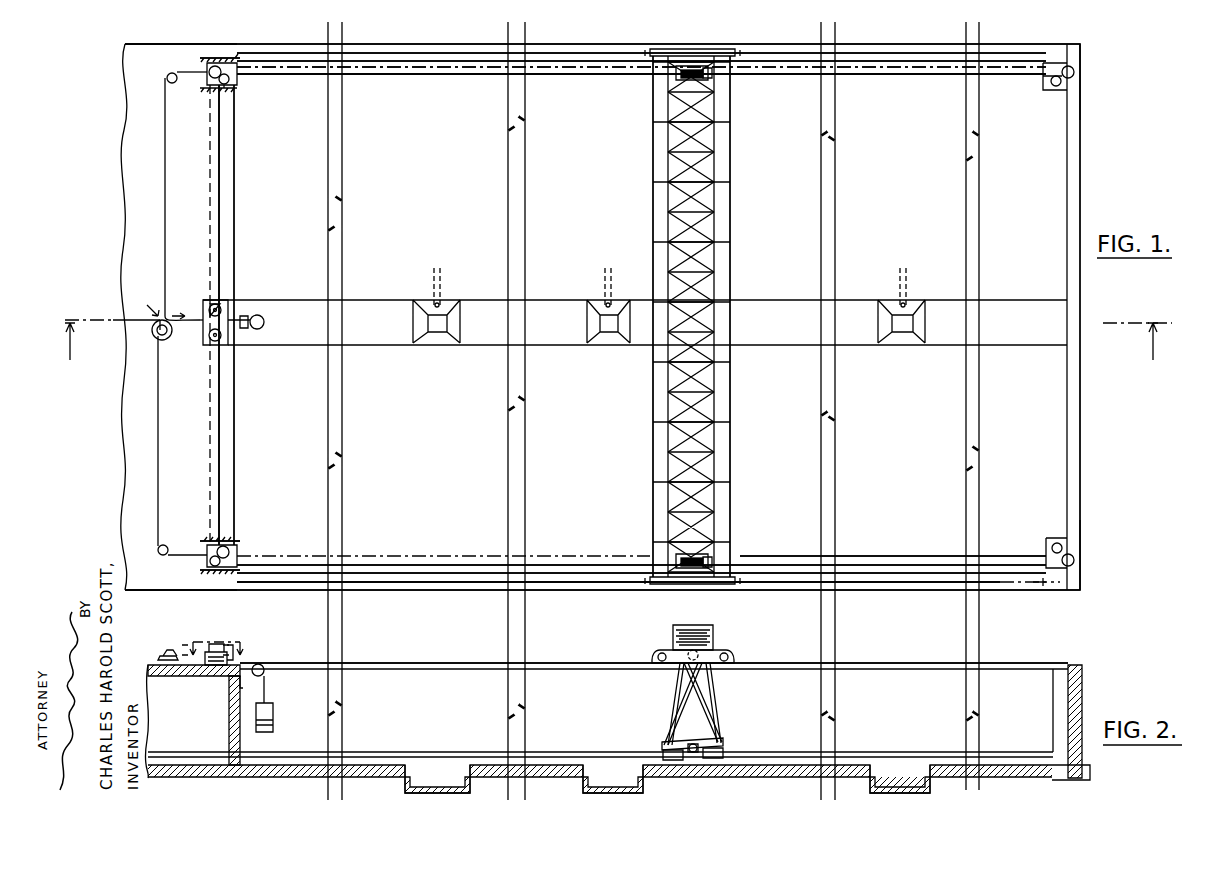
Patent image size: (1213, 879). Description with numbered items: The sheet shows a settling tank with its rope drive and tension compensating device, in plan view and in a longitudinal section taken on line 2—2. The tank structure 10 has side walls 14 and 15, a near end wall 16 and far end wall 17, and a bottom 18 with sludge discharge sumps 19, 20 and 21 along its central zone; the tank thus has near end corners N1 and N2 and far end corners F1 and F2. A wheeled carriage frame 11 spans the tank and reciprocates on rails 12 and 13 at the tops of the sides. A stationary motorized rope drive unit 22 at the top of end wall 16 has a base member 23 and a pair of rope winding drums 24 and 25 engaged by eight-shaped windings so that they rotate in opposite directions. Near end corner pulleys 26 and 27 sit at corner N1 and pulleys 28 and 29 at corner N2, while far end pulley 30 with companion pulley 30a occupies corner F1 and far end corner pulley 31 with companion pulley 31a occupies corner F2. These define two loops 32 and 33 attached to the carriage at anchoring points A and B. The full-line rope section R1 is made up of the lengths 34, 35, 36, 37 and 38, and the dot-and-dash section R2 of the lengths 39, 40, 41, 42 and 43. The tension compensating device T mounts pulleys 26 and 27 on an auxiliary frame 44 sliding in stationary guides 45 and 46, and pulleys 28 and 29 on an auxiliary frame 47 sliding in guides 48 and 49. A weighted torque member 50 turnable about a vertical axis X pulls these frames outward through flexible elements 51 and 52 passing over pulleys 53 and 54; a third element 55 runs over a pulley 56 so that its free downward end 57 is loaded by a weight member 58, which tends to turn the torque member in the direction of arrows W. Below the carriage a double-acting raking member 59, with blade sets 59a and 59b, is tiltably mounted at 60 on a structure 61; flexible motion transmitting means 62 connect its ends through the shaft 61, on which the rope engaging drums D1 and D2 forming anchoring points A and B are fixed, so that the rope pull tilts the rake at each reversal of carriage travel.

In FIG. 1, the tank structure 10 is at (626, 600).
In FIG. 1, the carriage frame 11 is at (662, 440).
In FIG. 2, the carriage frame 11 is at (728, 634).
In FIG. 1, the rail 12 is at (878, 585).
In FIG. 1, the rail 13 is at (862, 52).
In FIG. 1, the side wall 14 is at (558, 565).
In FIG. 1, the side wall 15 is at (582, 74).
In FIG. 1, the end wall 16 is at (235, 458).
In FIG. 2, the end wall 16 is at (228, 715).
In FIG. 1, the end wall 17 is at (1066, 415).
In FIG. 2, the end wall 17 is at (1078, 693).
In FIG. 1, the bottom 18 is at (432, 474).
In FIG. 2, the bottom 18 is at (805, 765).
In FIG. 1, the sludge discharge sump 19 is at (432, 345).
In FIG. 2, the sludge discharge sump 19 is at (462, 780).
In FIG. 1, the sludge discharge sump 20 is at (606, 345).
In FIG. 2, the sludge discharge sump 20 is at (632, 778).
In FIG. 1, the sludge discharge sump 21 is at (898, 345).
In FIG. 2, the sludge discharge sump 21 is at (883, 780).
In FIG. 1, the rope drive unit 22 is at (196, 330).
In FIG. 1, the base member 23 is at (222, 305).
In FIG. 1, the rope winding drum 24 is at (222, 340).
In FIG. 1, the rope winding drum 25 is at (218, 300).
In FIG. 1, the near end corner pulley 26 is at (218, 572).
In FIG. 2, the near end corner pulley 26 is at (222, 678).
In FIG. 1, the near end corner pulley 27 is at (230, 552).
In FIG. 1, the near end corner pulley 28 is at (213, 58).
In FIG. 1, the near end corner pulley 29 is at (230, 80).
In FIG. 1, the far end pulley 30 is at (1075, 558).
In FIG. 1, the companion pulley 30a is at (1051, 546).
In FIG. 1, the far end corner pulley 31 is at (1075, 72).
In FIG. 1, the companion pulley 31a is at (1052, 88).
In FIG. 1, the loop 32 is at (1036, 568).
In FIG. 1, the loop 33 is at (1050, 64).
In FIG. 1, the rope length 34 is at (868, 556).
In FIG. 1, the rope length 35 is at (447, 563).
In FIG. 1, the rope length 36 is at (212, 445).
In FIG. 1, the rope length 37 is at (235, 182).
In FIG. 1, the rope length 38 is at (422, 76).
In FIG. 1, the rope length 39 is at (938, 74).
In FIG. 1, the rope length 40 is at (882, 68).
In FIG. 1, the rope length 41 is at (208, 172).
In FIG. 1, the rope length 42 is at (222, 410).
In FIG. 1, the rope length 43 is at (370, 563).
In FIG. 1, the auxiliary frame 44 is at (208, 560).
In FIG. 1, the stationary guide 45 is at (207, 573).
In FIG. 1, the stationary guide 46 is at (232, 540).
In FIG. 1, the auxiliary frame 47 is at (209, 78).
In FIG. 1, the stationary guide 48 is at (225, 88).
In FIG. 1, the stationary guide 49 is at (206, 57).
In FIG. 1, the weighted torque member 50 is at (156, 346).
In FIG. 2, the weighted torque member 50 is at (166, 658).
In FIG. 1, the flexible force-transmitting element 51 is at (160, 395).
In FIG. 1, the flexible force-transmitting element 52 is at (160, 194).
In FIG. 1, the pulley 53 is at (158, 549).
In FIG. 1, the pulley 54 is at (169, 72).
In FIG. 1, the flexible force-transmitting element 55 is at (192, 300).
In FIG. 2, the flexible force-transmitting element 55 is at (235, 665).
In FIG. 1, the pulley 56 is at (258, 315).
In FIG. 2, the pulley 56 is at (264, 668).
In FIG. 2, the free downward end 57 is at (268, 688).
In FIG. 2, the weight member 58 is at (274, 713).
In FIG. 2, the raking member 59 is at (720, 738).
In FIG. 2, the raking blades 59a is at (664, 758).
In FIG. 2, the raking blades 59b is at (712, 758).
In FIG. 2, the tilting mount 60 is at (692, 753).
In FIG. 1, the structure / shaft 61 is at (718, 418).
In FIG. 2, the structure / shaft 61 is at (712, 678).
In FIG. 2, the flexible motion transmitting means 62 is at (712, 712).
In FIG. 1, the section line 2 is at (616, 346).
In FIG. 1, the anchoring point A is at (713, 558).
In FIG. 1, the anchoring point B is at (713, 76).
In FIG. 1, the rope engaging drum D1 is at (678, 556).
In FIG. 1, the rope engaging drum D2 is at (678, 75).
In FIG. 1, the far end corner F1 is at (1072, 578).
In FIG. 1, the far end corner F2 is at (1078, 46).
In FIG. 1, the near end corner N1 is at (181, 577).
In FIG. 1, the near end corner N2 is at (165, 48).
In FIG. 1, the rope section R1 is at (300, 582).
In FIG. 1, the rope section R2 is at (310, 62).
In FIG. 1, the rope tension compensating device T is at (149, 310).
In FIG. 1, the arrows W is at (180, 312).
In FIG. 1, the vertical axis X is at (129, 330).
In FIG. 2, the vertical axis X is at (207, 639).